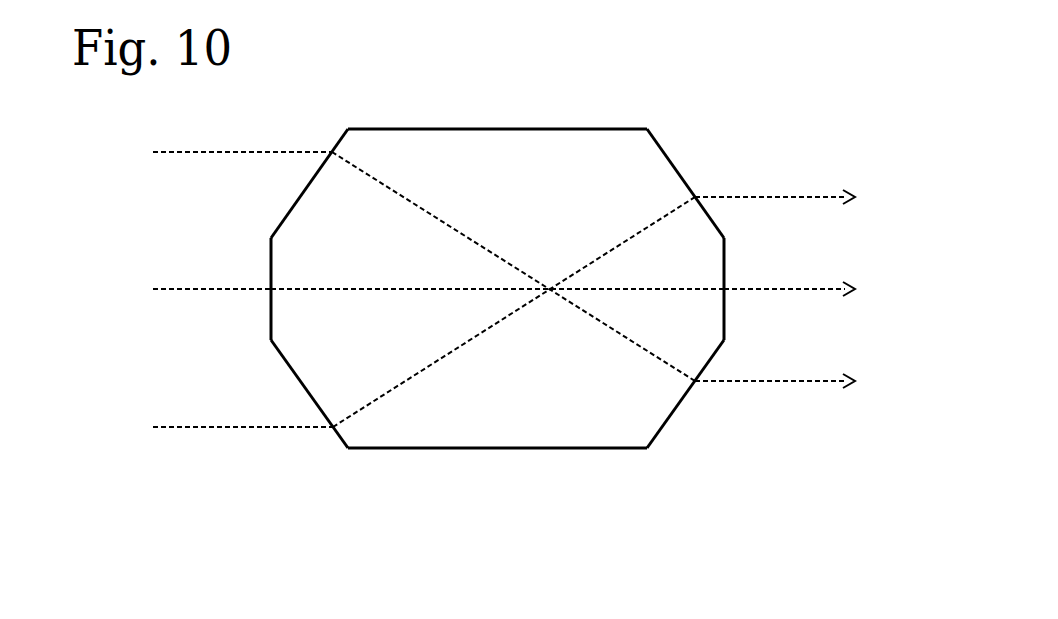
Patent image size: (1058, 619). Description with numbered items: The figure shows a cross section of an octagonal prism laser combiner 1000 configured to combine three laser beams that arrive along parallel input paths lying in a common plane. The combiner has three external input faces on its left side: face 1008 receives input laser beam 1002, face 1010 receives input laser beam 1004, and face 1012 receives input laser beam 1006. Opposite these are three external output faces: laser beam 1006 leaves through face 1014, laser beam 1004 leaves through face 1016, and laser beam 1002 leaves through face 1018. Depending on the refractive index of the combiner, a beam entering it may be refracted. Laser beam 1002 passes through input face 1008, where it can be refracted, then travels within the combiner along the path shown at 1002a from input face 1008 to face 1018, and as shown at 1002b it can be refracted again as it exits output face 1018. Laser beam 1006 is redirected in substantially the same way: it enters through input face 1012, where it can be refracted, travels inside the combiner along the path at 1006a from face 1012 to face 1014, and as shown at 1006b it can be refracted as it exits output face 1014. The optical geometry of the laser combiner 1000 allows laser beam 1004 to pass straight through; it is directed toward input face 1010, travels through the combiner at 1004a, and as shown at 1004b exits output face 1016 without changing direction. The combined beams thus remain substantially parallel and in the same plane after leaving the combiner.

The laser combiner 1000 is at (508, 95).
The input laser beam 1002 is at (158, 153).
The input laser beam 1004 is at (158, 290).
The input laser beam 1006 is at (158, 428).
The internal path of laser beam 1002 1002a is at (404, 197).
The internal path of laser beam 1004 1004a is at (420, 288).
The internal path of laser beam 1006 1006a is at (401, 385).
The exiting laser beam 1002 1002b is at (796, 383).
The exiting laser beam 1004 1004b is at (796, 291).
The exiting laser beam 1006 1006b is at (798, 197).
The external input face 1008 is at (307, 187).
The external input face 1010 is at (270, 262).
The external input face 1012 is at (302, 386).
The external output face 1014 is at (663, 152).
The external output face 1016 is at (725, 265).
The external output face 1018 is at (660, 430).